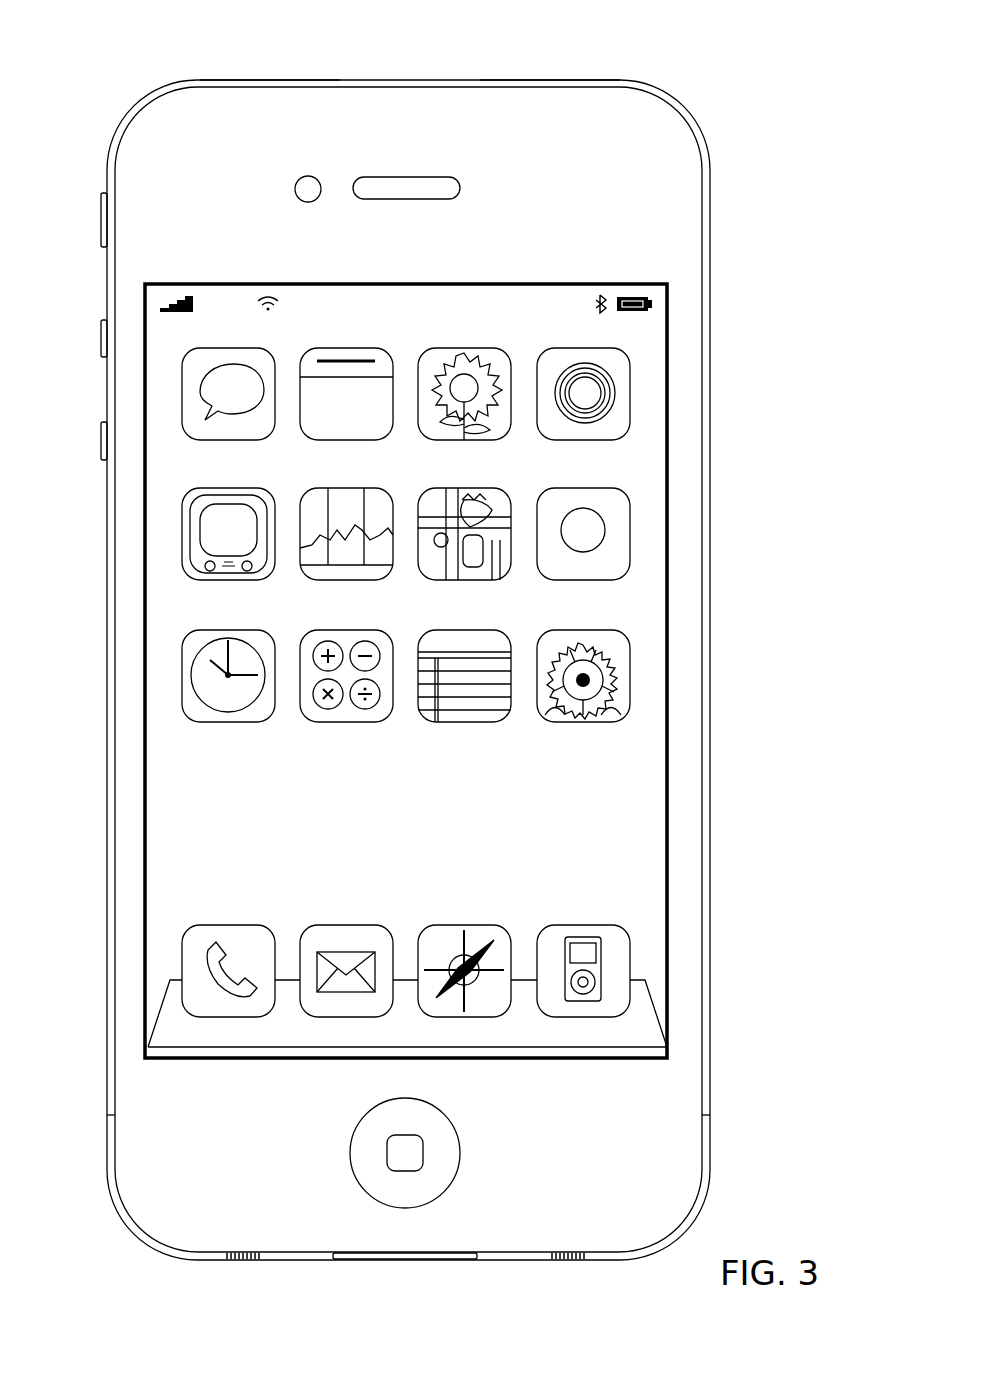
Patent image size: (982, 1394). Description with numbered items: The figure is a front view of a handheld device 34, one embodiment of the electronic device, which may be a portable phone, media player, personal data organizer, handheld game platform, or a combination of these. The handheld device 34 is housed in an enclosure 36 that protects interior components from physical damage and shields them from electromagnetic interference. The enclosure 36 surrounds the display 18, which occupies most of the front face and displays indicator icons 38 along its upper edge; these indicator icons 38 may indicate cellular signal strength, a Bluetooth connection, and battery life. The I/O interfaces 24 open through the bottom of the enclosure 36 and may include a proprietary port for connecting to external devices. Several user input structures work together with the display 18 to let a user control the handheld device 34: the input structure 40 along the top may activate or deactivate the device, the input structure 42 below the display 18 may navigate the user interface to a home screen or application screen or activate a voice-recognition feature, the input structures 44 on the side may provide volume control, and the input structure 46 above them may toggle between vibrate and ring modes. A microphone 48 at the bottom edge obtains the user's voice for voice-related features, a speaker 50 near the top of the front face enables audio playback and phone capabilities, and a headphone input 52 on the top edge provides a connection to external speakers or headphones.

The handheld device 34 is at (201, 40).
The enclosure 36 is at (705, 272).
The input structure 40 is at (543, 82).
The headphone input 52 is at (276, 82).
The speaker 50 is at (428, 178).
The input structure 46 is at (102, 226).
The input structures 44 is at (102, 336).
The display 18 is at (459, 657).
The indicator icons 38 is at (192, 297).
The input structure 42 is at (461, 1160).
The microphone 48 is at (236, 1262).
The I/O interfaces 24 is at (392, 1262).